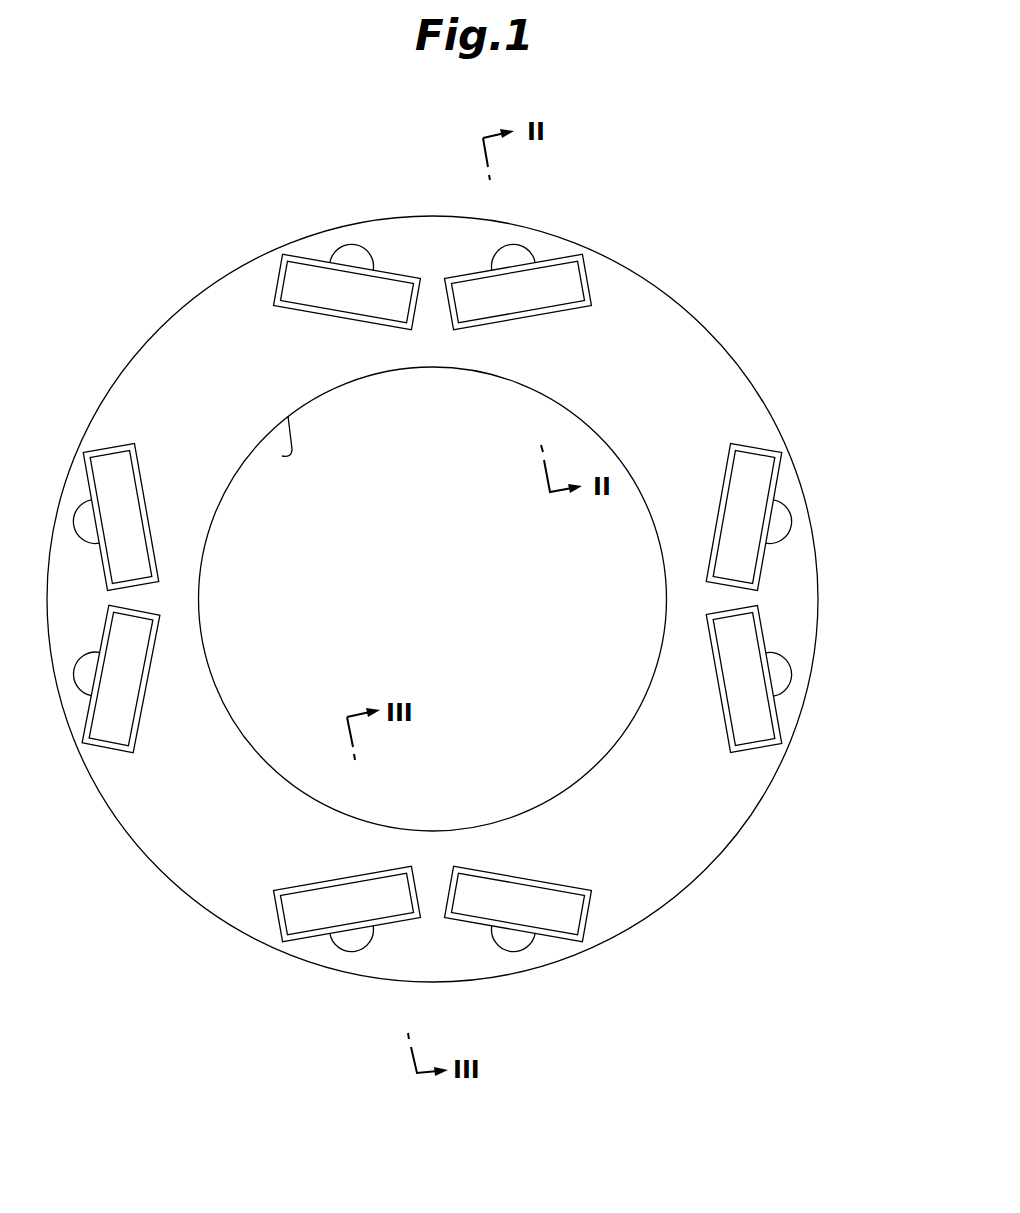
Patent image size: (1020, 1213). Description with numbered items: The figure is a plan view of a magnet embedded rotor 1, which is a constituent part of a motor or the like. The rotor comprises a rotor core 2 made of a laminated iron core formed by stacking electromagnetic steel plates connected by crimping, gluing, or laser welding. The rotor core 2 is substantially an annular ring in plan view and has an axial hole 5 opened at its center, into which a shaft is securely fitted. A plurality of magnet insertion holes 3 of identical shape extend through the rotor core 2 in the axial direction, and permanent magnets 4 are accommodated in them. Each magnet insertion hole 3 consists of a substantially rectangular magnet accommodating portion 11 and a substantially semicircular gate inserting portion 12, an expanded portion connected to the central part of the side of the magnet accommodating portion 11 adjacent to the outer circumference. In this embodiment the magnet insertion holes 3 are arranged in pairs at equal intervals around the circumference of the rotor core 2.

The magnet embedded rotor 1 is at (653, 178).
The rotor core 2 is at (678, 300).
The magnet insertion hole 3 is at (762, 465).
The permanent magnet 4 is at (745, 525).
The axial hole 5 is at (282, 456).
The magnet accommodating portion 11 is at (740, 732).
The gate inserting portion 12 is at (776, 677).